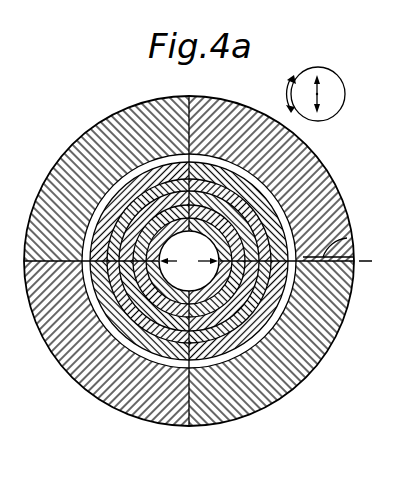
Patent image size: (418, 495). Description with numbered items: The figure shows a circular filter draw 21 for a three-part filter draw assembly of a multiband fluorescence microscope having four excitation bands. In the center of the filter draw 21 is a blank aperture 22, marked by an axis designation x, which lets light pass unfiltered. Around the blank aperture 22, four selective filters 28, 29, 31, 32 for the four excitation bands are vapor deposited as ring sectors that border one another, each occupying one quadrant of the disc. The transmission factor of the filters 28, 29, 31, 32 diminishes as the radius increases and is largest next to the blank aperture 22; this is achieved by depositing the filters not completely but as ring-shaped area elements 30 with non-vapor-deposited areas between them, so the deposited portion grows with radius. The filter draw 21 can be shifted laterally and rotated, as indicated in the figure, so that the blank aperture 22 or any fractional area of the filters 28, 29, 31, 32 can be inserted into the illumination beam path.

The filter draw 21 is at (349, 369).
The blank aperture 22 is at (194, 282).
The selective filter 28 is at (97, 140).
The selective filter 29 is at (320, 178).
The ring-shaped area elements 30 is at (157, 338).
The selective filter 31 is at (290, 376).
The selective filter 32 is at (92, 372).
The axis marker x is at (325, 243).